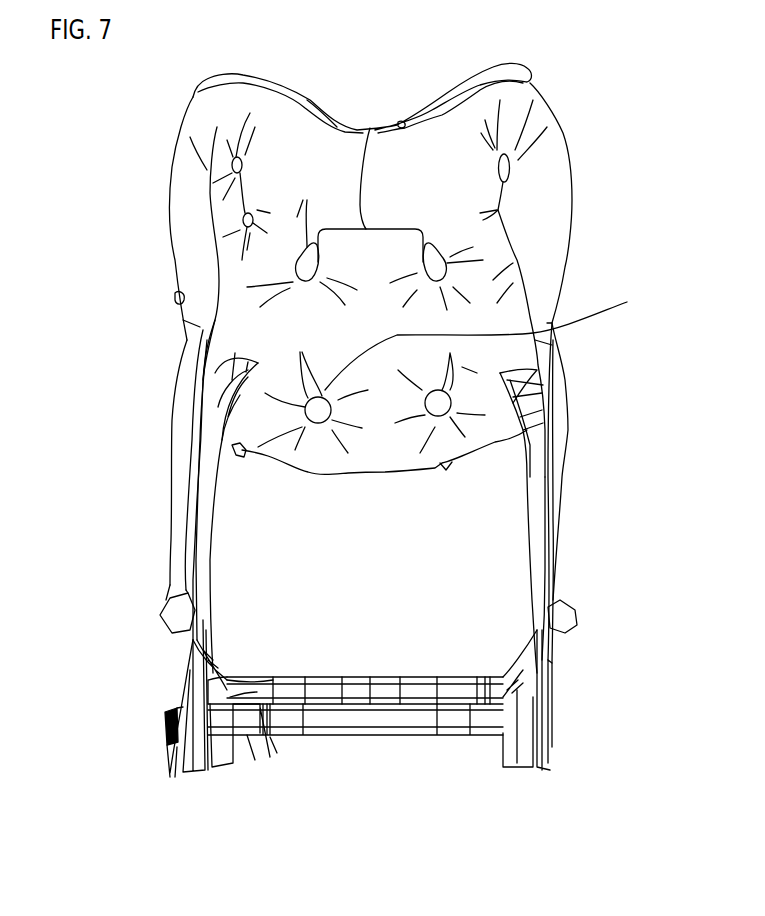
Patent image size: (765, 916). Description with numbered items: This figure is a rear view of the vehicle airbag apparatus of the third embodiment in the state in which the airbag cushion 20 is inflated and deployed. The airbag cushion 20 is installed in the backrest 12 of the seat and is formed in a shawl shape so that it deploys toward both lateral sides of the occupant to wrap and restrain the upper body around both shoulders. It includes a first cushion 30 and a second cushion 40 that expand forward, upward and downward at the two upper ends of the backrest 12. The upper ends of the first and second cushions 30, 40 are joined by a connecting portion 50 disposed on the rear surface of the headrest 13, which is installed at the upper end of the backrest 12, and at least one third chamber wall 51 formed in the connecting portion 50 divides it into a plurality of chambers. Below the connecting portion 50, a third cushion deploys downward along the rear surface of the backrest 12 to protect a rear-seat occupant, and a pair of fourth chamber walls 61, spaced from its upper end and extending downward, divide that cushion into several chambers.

The backrest 12 is at (576, 683).
The headrest 13 is at (435, 573).
The airbag cushion 20 is at (574, 108).
The first cushion 30 is at (545, 207).
The second cushion 40 is at (178, 246).
The connecting portion 50 is at (405, 155).
The third chamber wall 51 is at (370, 128).
The fourth chamber wall 61 is at (438, 403).